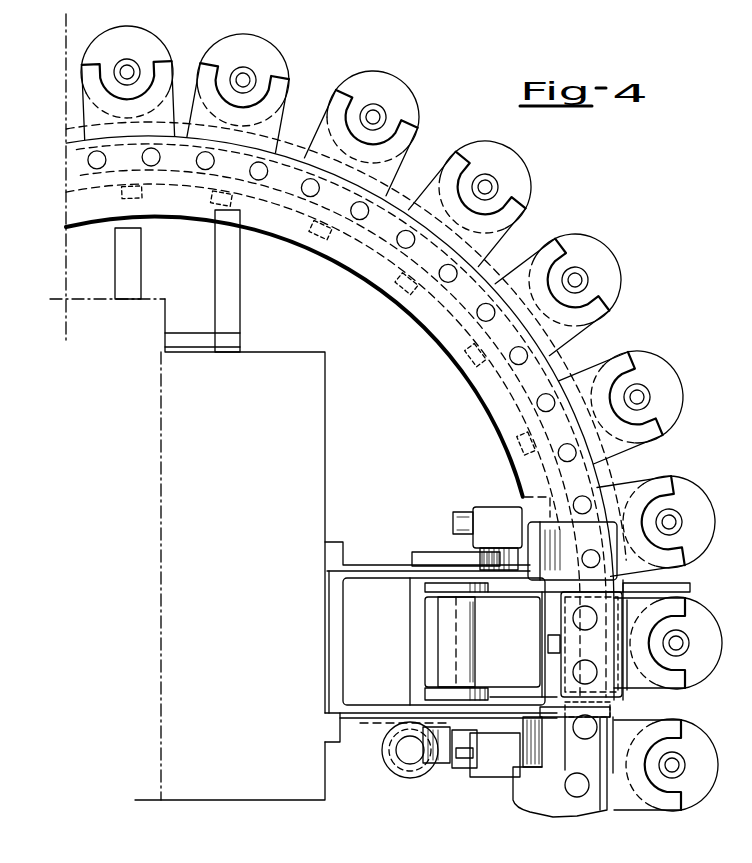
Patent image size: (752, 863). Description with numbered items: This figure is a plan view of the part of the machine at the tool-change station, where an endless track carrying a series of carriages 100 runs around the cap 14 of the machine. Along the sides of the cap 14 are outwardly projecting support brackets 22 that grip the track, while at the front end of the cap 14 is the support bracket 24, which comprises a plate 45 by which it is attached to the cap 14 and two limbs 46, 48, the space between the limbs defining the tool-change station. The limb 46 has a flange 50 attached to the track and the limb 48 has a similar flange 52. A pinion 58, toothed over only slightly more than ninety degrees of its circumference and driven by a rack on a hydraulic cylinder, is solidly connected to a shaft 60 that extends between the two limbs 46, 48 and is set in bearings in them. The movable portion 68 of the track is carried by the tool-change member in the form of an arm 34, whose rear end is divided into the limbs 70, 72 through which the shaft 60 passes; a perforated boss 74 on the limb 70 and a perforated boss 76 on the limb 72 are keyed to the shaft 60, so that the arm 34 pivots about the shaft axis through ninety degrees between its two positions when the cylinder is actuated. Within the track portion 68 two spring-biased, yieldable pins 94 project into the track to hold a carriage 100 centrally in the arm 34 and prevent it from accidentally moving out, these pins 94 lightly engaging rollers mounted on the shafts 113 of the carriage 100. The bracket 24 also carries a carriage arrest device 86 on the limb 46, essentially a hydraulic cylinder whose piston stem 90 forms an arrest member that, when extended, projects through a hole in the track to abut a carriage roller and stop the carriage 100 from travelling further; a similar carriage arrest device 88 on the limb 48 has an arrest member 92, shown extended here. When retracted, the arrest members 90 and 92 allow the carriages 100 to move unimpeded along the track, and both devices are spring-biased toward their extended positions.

The carriage 100 is at (298, 112).
The cap 14 is at (313, 400).
The support bracket 22 is at (232, 295).
The support bracket 24 is at (357, 566).
The limb 48 is at (396, 566).
The arrest member 92 is at (456, 520).
The carriage arrest device 88 is at (490, 513).
The flange 52 is at (608, 490).
The shaft 60 is at (445, 637).
The perforated boss 76 is at (425, 587).
The limb 72 is at (514, 597).
The limb 70 is at (495, 688).
The perforated boss 74 is at (425, 696).
The limb 46 is at (380, 714).
The plate 45 is at (333, 733).
The pinion 58 is at (456, 760).
The piston stem 90 is at (478, 758).
The carriage arrest device 86 is at (506, 747).
The flange 50 is at (587, 818).
The arm 34 is at (618, 699).
The pin 94 is at (582, 644).
The shaft 113 is at (635, 640).
The track portion 68 is at (626, 598).